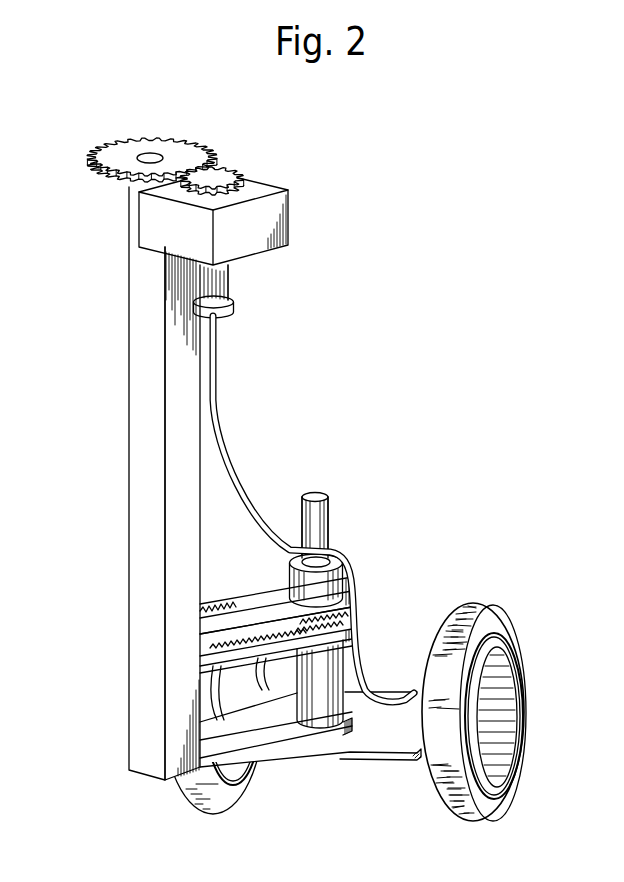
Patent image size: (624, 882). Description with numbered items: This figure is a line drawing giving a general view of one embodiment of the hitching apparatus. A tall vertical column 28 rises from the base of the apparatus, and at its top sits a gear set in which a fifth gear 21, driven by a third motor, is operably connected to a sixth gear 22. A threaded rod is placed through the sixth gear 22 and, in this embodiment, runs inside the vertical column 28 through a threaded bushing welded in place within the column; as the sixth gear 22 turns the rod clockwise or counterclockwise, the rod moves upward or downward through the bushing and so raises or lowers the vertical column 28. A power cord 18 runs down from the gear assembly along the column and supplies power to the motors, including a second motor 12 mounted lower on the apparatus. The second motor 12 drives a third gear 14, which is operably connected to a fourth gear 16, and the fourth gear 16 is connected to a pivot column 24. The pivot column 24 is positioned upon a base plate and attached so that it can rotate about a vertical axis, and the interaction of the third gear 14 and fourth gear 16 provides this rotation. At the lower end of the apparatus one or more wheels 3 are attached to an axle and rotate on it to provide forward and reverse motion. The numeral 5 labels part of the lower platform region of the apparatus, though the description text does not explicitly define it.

The wheels 3 is at (507, 650).
The base platform 5 is at (366, 728).
The second motor 12 is at (323, 517).
The third gear 14 is at (258, 640).
The fourth gear 16 is at (352, 610).
The power cord 18 is at (216, 398).
The fifth gear 21 is at (236, 171).
The sixth gear 22 is at (185, 143).
The pivot column 24 is at (318, 705).
The vertical column 28 is at (142, 455).